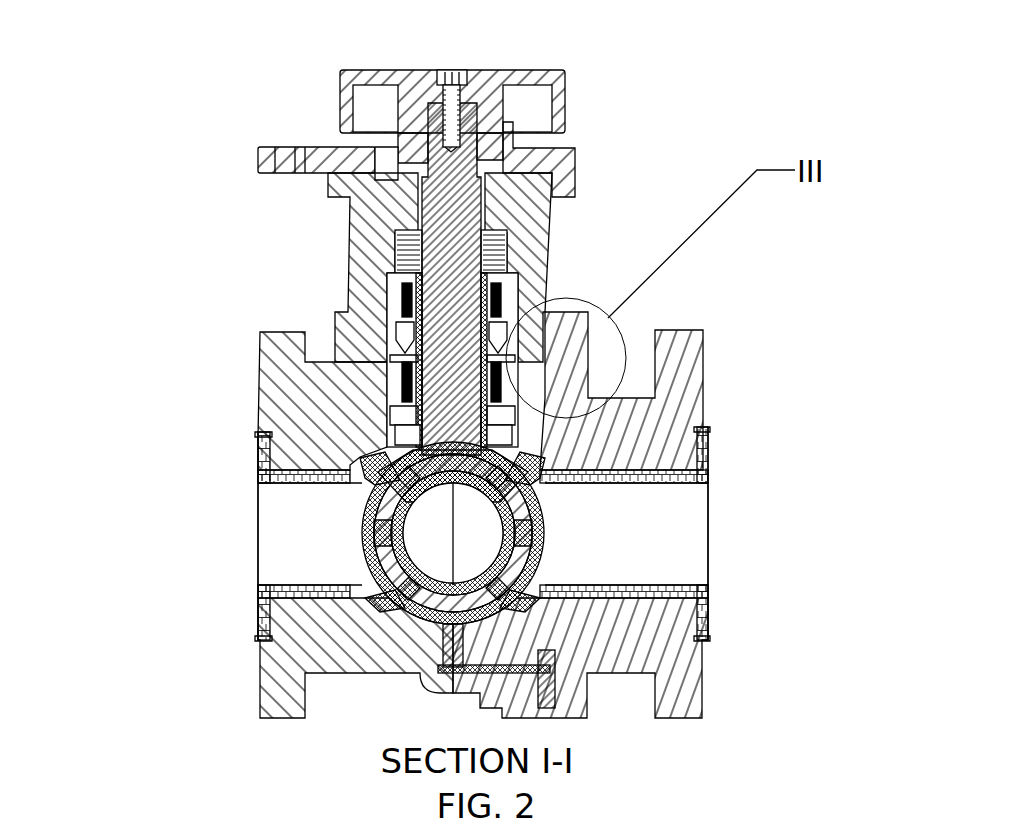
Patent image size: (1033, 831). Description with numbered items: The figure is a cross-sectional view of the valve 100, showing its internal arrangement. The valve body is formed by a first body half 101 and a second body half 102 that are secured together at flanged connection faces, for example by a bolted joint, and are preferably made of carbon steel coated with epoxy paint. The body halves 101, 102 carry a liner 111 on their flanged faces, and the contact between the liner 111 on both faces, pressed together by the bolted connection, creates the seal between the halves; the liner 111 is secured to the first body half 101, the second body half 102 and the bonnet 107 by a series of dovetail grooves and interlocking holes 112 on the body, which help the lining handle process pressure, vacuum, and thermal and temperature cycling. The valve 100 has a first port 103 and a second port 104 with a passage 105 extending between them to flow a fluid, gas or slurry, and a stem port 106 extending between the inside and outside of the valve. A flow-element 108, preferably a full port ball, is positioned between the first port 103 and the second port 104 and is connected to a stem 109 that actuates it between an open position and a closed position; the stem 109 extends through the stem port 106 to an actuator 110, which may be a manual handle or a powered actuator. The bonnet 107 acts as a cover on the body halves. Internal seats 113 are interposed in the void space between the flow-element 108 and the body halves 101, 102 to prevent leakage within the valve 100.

The valve 100 is at (222, 50).
The first body half 101 is at (288, 367).
The second body half 102 is at (683, 350).
The first port 103 is at (256, 510).
The second port 104 is at (710, 540).
The passage 105 is at (283, 547).
The stem port 106 is at (407, 432).
The bonnet 107 is at (540, 233).
The flow-element 108 is at (520, 508).
The stem 109 is at (453, 230).
The actuator 110 is at (491, 95).
The liner 111 is at (397, 312).
The dovetail grooves and interlocking holes 112 is at (667, 468).
The internal seats 113 is at (375, 472).